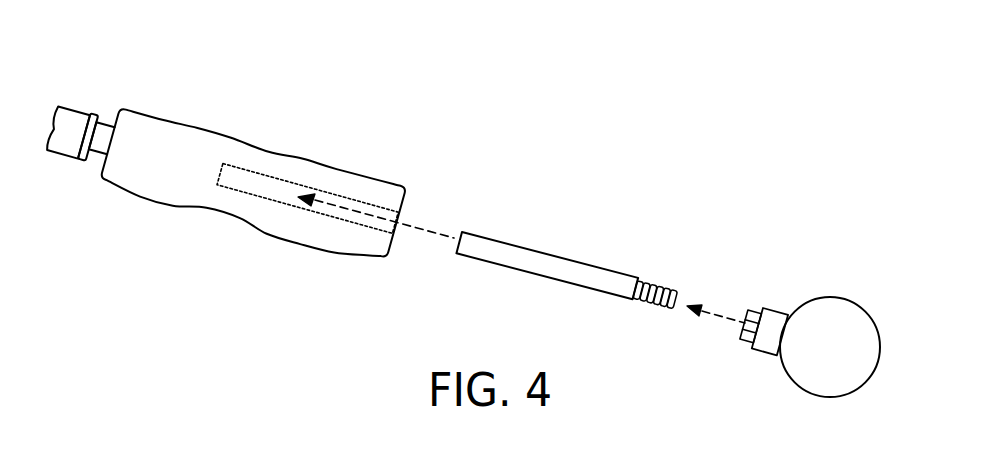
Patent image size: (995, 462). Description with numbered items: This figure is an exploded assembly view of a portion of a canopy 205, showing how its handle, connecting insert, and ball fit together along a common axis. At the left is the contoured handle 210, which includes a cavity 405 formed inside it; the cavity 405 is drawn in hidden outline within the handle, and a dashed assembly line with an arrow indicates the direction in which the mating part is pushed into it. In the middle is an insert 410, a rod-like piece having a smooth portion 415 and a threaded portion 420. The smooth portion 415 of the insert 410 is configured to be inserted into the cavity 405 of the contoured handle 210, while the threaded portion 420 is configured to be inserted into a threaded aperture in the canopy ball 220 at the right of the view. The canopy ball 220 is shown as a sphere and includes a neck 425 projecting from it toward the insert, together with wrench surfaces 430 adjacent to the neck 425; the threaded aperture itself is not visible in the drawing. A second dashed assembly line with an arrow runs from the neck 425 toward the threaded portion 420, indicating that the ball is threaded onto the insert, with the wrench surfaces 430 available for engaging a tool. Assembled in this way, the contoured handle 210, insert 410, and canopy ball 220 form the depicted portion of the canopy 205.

The canopy 205 is at (426, 76).
The contoured handle 210 is at (168, 140).
The cavity 405 is at (280, 188).
The insert 410 is at (594, 198).
The smooth portion 415 is at (510, 257).
The threaded portion 420 is at (665, 290).
The canopy ball 220 is at (863, 275).
The neck 425 is at (777, 317).
The wrench surfaces 430 is at (745, 338).